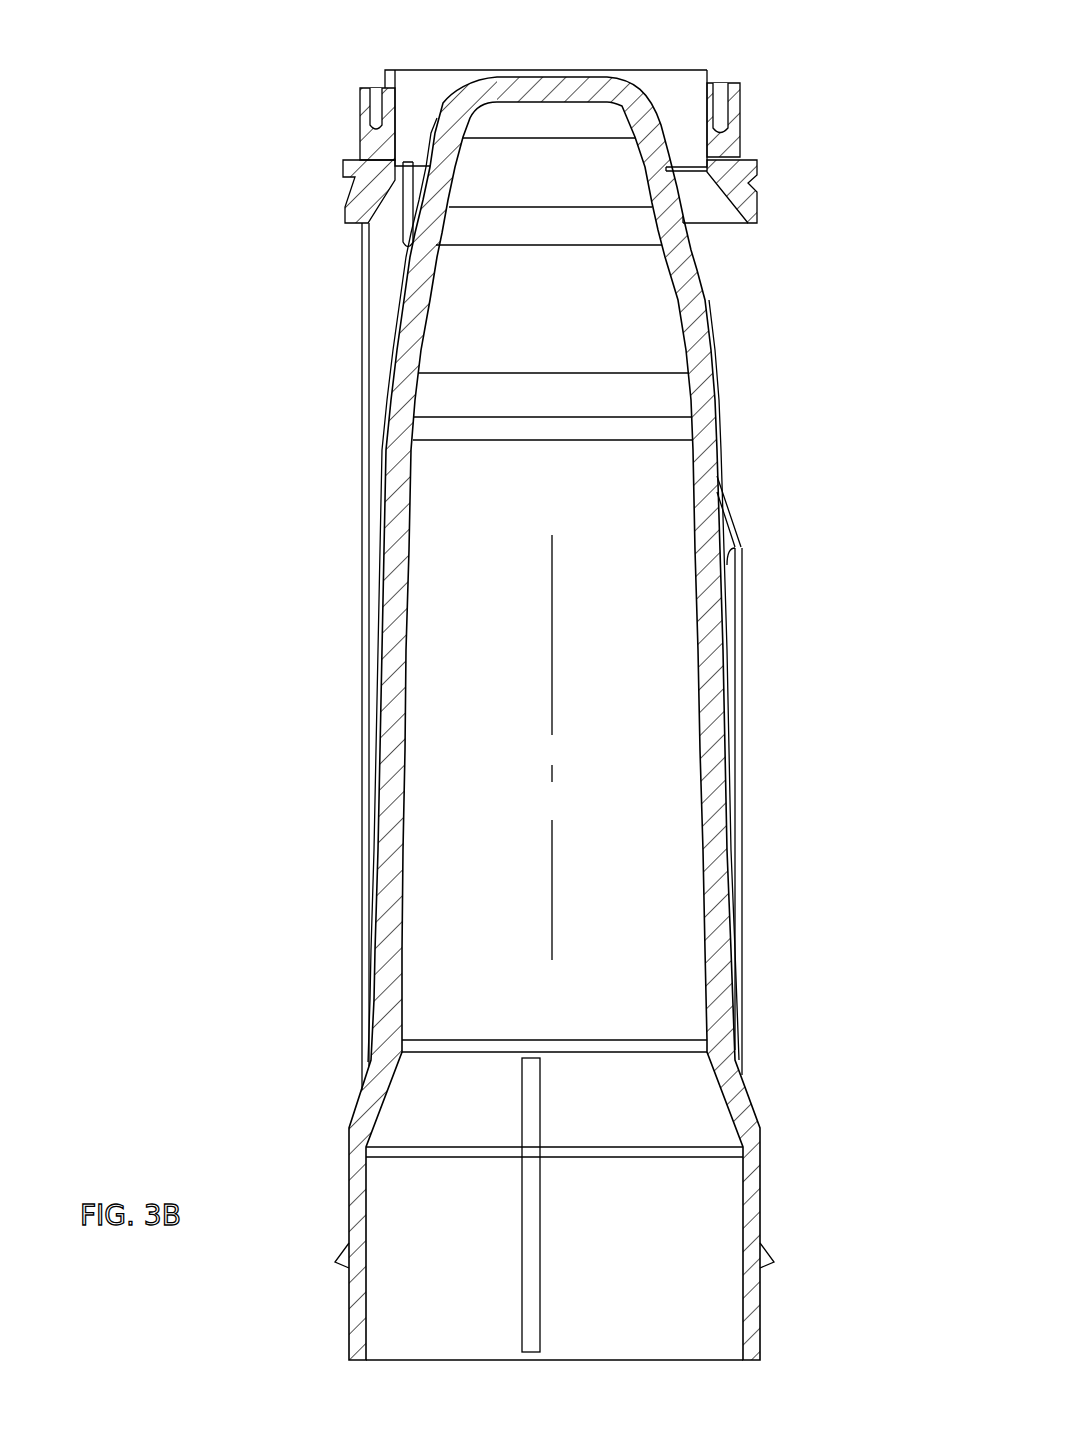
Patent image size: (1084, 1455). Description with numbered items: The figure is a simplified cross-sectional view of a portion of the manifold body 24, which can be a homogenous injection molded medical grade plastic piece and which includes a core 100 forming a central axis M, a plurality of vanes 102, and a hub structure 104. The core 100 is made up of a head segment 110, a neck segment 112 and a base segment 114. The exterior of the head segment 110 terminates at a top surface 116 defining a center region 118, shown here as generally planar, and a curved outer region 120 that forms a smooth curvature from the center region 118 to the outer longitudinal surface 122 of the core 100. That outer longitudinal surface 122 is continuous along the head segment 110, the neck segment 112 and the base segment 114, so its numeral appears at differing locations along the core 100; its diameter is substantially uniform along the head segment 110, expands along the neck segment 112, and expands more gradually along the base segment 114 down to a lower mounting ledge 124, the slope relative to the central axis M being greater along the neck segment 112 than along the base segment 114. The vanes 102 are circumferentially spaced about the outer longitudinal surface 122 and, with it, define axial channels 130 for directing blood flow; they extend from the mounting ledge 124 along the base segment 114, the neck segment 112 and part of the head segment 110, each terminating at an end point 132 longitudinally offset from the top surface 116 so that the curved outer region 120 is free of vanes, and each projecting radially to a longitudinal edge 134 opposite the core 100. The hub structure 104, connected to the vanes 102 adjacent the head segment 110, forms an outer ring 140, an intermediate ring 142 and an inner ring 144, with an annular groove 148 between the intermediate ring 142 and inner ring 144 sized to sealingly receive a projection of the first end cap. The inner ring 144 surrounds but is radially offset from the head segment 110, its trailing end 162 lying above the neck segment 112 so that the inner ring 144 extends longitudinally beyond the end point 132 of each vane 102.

The manifold body 24 is at (192, 252).
The core 100 is at (727, 421).
The vanes 102 is at (367, 590).
The hub structure 104 is at (770, 138).
The head segment 110 is at (668, 115).
The neck segment 112 is at (685, 216).
The base segment 114 is at (721, 468).
The top surface 116 is at (612, 73).
The center region 118 is at (561, 70).
The curved outer region 120 is at (443, 110).
The outer longitudinal surface 122 is at (400, 247).
The lower mounting ledge 124 is at (344, 1262).
The axial channels 130 is at (740, 546).
The end point 132 is at (360, 140).
The longitudinal edge 134 is at (737, 760).
The outer ring 140 is at (756, 185).
The intermediate ring 142 is at (742, 100).
The inner ring 144 is at (716, 80).
The annular groove 148 is at (378, 106).
The trailing end 162 is at (768, 150).
The central axis M is at (556, 640).